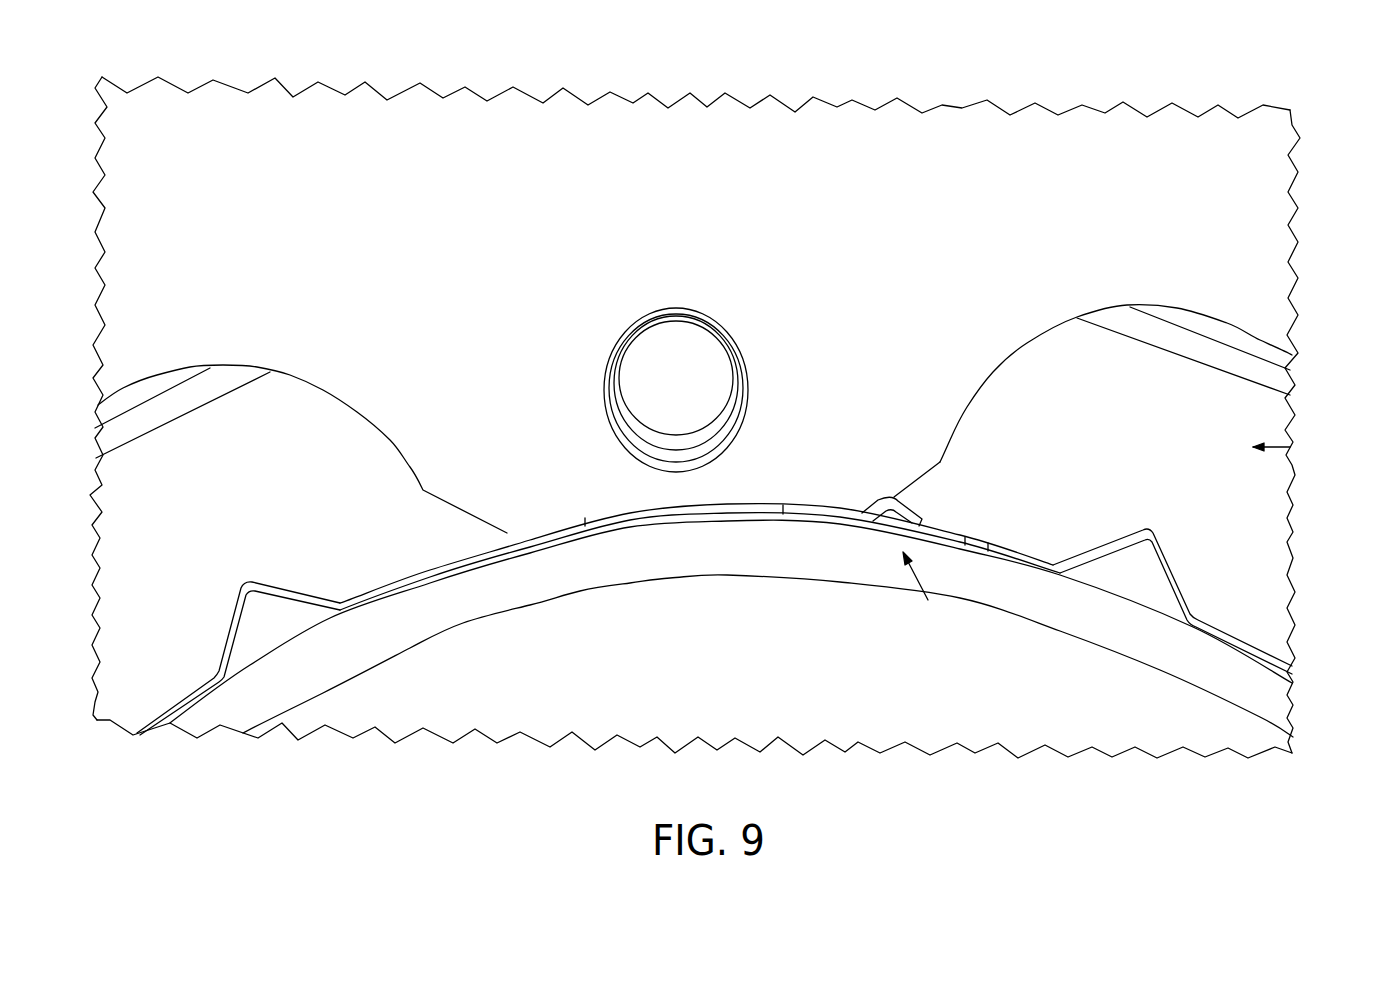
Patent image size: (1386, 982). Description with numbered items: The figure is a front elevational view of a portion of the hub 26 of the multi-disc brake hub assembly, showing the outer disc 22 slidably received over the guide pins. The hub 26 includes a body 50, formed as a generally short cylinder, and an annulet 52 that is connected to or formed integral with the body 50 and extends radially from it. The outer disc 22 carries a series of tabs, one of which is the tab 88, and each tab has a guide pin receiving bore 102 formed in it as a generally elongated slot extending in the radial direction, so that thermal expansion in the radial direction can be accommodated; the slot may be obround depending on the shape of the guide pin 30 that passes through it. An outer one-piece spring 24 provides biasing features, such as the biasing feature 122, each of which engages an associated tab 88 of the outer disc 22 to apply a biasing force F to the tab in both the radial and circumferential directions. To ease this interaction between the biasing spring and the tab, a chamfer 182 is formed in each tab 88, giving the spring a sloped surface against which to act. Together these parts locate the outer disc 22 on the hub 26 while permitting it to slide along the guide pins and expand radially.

The outer disc 22 is at (946, 106).
The outer one-piece spring 24 is at (502, 550).
The hub 26 is at (1290, 447).
The guide pin 30 is at (708, 363).
The body 50 is at (1281, 697).
The annulet 52 is at (1283, 542).
The tab 88 is at (993, 372).
The guide pin receiving bore 102 is at (725, 437).
The biasing feature 122 is at (917, 510).
The chamfer 182 is at (938, 467).
The biasing force F is at (922, 588).